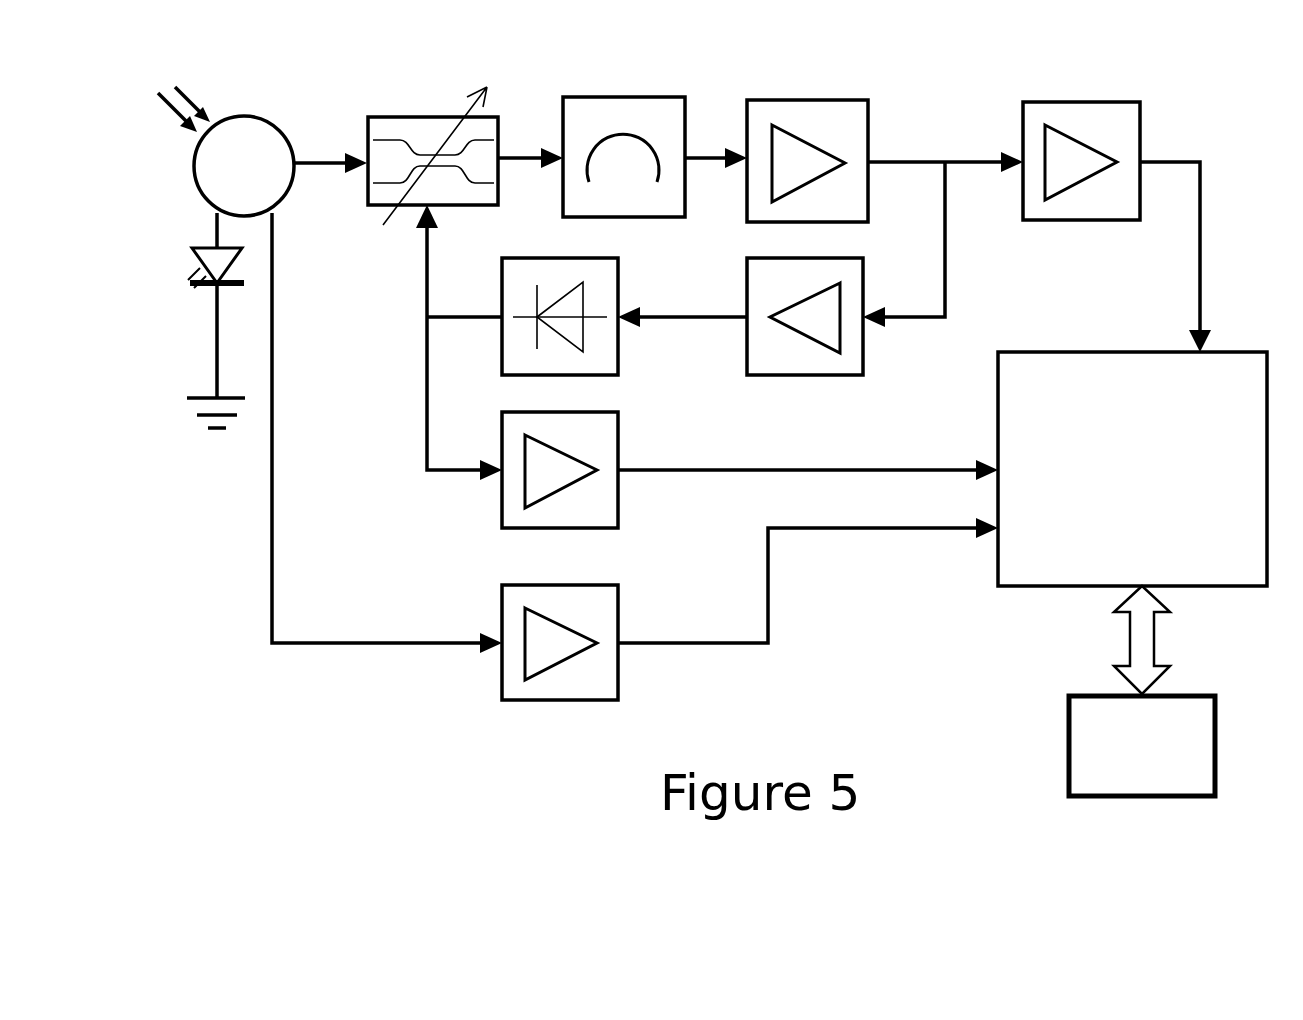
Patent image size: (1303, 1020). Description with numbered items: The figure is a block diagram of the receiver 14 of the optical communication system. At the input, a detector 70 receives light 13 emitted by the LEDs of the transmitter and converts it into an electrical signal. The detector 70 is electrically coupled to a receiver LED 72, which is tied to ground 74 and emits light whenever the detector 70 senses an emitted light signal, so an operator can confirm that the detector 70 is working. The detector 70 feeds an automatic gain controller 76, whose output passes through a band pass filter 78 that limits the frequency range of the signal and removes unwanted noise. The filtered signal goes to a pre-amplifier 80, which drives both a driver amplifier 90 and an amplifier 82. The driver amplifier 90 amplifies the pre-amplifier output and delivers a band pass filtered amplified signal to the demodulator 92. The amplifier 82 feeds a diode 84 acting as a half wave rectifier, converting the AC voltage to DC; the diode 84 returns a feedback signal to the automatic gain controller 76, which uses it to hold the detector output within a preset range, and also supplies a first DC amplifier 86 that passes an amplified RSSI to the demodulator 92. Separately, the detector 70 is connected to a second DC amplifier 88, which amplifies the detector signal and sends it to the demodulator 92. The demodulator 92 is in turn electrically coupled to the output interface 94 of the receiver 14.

The light 13 is at (171, 107).
The receiver 14 is at (238, 770).
The detector 70 is at (237, 117).
The receiver LED 72 is at (210, 290).
The ground 74 is at (218, 435).
The automatic gain controller 76 is at (390, 117).
The band pass filter 78 is at (613, 97).
The pre-amplifier 80 is at (797, 100).
The amplifier 82 is at (815, 375).
The diode 84 is at (618, 290).
The first DC amplifier 86 is at (525, 528).
The second DC amplifier 88 is at (565, 700).
The driver amplifier 90 is at (1068, 102).
The demodulator 92 is at (1083, 586).
The output interface 94 is at (1068, 715).